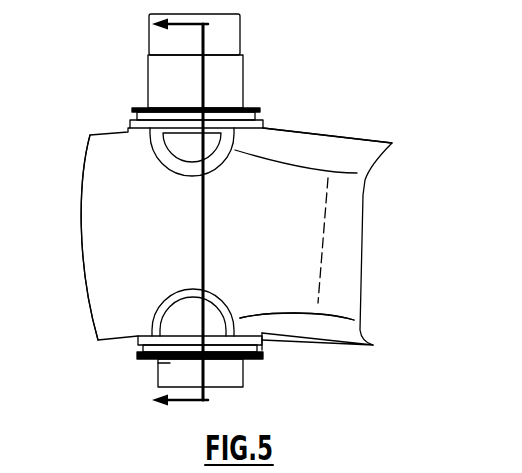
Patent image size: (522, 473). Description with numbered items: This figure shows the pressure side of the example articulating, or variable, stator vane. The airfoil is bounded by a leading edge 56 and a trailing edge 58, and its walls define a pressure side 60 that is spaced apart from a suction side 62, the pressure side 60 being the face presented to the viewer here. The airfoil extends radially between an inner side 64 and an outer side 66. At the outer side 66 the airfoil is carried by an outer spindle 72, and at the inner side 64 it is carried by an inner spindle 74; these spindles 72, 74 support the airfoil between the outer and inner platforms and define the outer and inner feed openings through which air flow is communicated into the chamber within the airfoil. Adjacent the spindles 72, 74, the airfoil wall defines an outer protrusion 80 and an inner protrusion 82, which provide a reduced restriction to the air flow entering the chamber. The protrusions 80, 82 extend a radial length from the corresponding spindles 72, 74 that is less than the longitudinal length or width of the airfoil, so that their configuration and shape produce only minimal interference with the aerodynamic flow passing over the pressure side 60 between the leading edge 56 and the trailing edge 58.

The leading edge 56 is at (372, 236).
The trailing edge 58 is at (73, 278).
The pressure side 60 is at (293, 272).
The suction side 62 is at (104, 207).
The inner side 64 is at (303, 360).
The outer side 66 is at (341, 126).
The outer spindle 72 is at (223, 77).
The inner spindle 74 is at (170, 368).
The outer protrusion 80 is at (181, 146).
The inner protrusion 82 is at (182, 320).